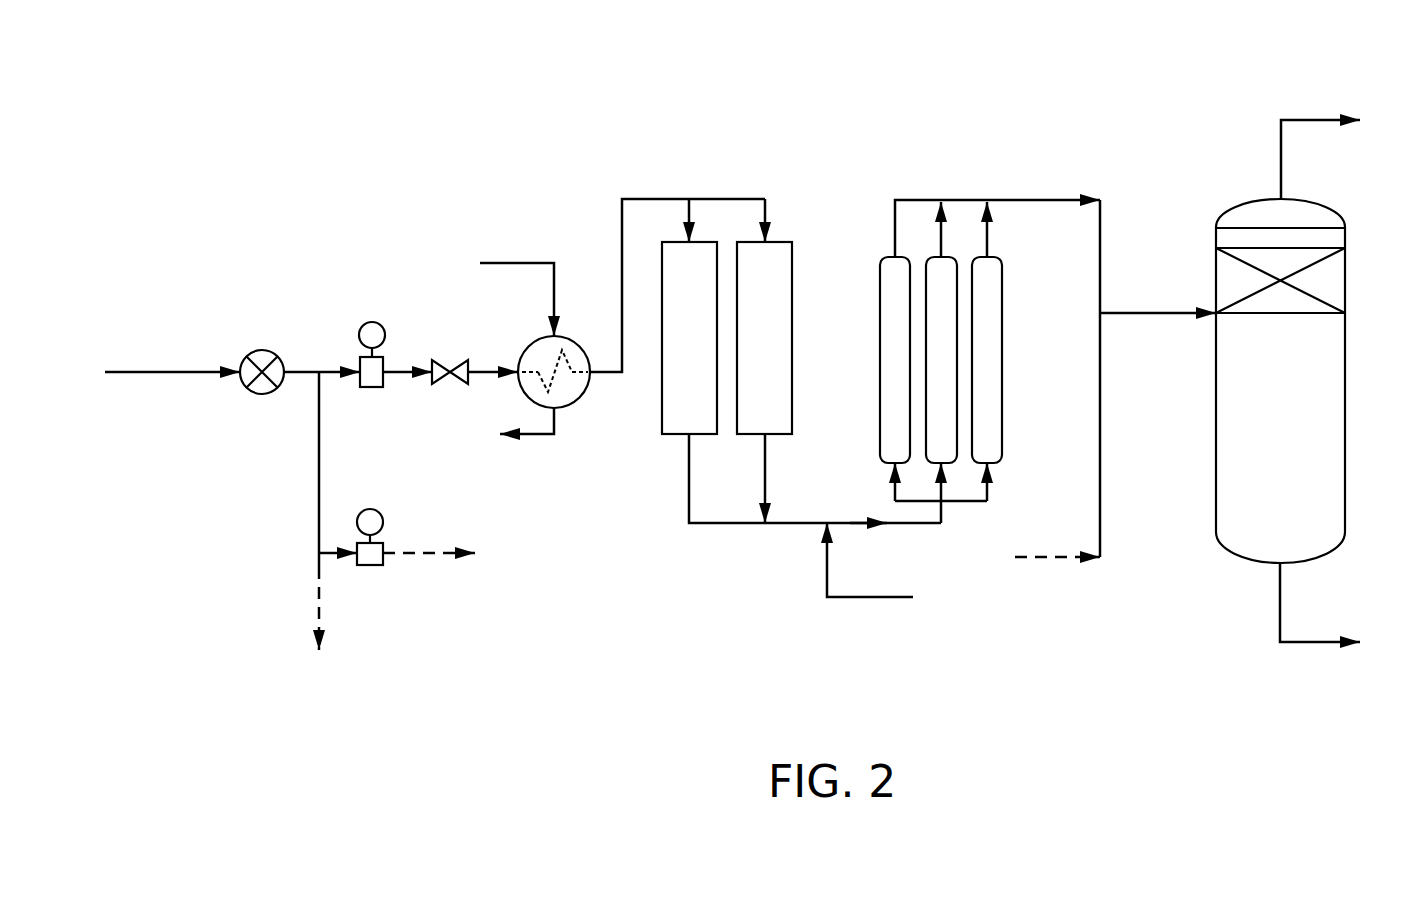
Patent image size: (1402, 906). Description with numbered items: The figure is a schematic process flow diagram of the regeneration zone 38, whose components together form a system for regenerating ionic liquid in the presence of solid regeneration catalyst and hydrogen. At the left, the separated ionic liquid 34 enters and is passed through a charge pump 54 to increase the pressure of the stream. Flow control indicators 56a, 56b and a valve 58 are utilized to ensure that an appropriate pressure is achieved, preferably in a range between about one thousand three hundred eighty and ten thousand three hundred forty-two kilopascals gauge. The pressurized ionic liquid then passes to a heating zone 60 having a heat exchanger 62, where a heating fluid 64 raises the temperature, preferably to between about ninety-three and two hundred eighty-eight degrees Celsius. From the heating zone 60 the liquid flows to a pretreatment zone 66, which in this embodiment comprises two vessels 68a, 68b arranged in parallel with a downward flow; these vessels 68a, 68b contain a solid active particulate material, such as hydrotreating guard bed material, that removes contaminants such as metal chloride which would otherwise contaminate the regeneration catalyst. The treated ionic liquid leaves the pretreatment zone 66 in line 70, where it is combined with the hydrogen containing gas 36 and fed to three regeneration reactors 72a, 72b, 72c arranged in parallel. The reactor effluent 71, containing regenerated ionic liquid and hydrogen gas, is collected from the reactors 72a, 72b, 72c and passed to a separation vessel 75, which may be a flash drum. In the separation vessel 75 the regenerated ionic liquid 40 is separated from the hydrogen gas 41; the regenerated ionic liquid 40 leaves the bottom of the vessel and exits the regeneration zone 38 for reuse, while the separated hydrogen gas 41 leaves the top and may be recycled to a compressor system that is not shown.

The regeneration zone 38 is at (410, 68).
The separated ionic liquid 34 is at (172, 372).
The charge pump 54 is at (262, 350).
The flow control indicator 56a is at (380, 360).
The flow control indicator 56b is at (380, 543).
The valve 58 is at (455, 362).
The heat exchanger 62 is at (573, 346).
The heating fluid 64 is at (520, 263).
The pretreatment zone 66 is at (779, 192).
The heating zone 60 is at (762, 397).
The vessel 68a is at (792, 328).
The vessel 68b is at (676, 434).
The line 70 is at (803, 523).
The hydrogen containing gas 36 is at (870, 597).
The reactor effluent 71 is at (896, 200).
The regeneration reactor 72a is at (998, 257).
The regeneration reactor 72b is at (945, 257).
The regeneration reactor 72c is at (886, 257).
The separation vessel 75 is at (1308, 200).
The hydrogen gas 41 is at (1315, 120).
The regenerated ionic liquid 40 is at (1305, 642).